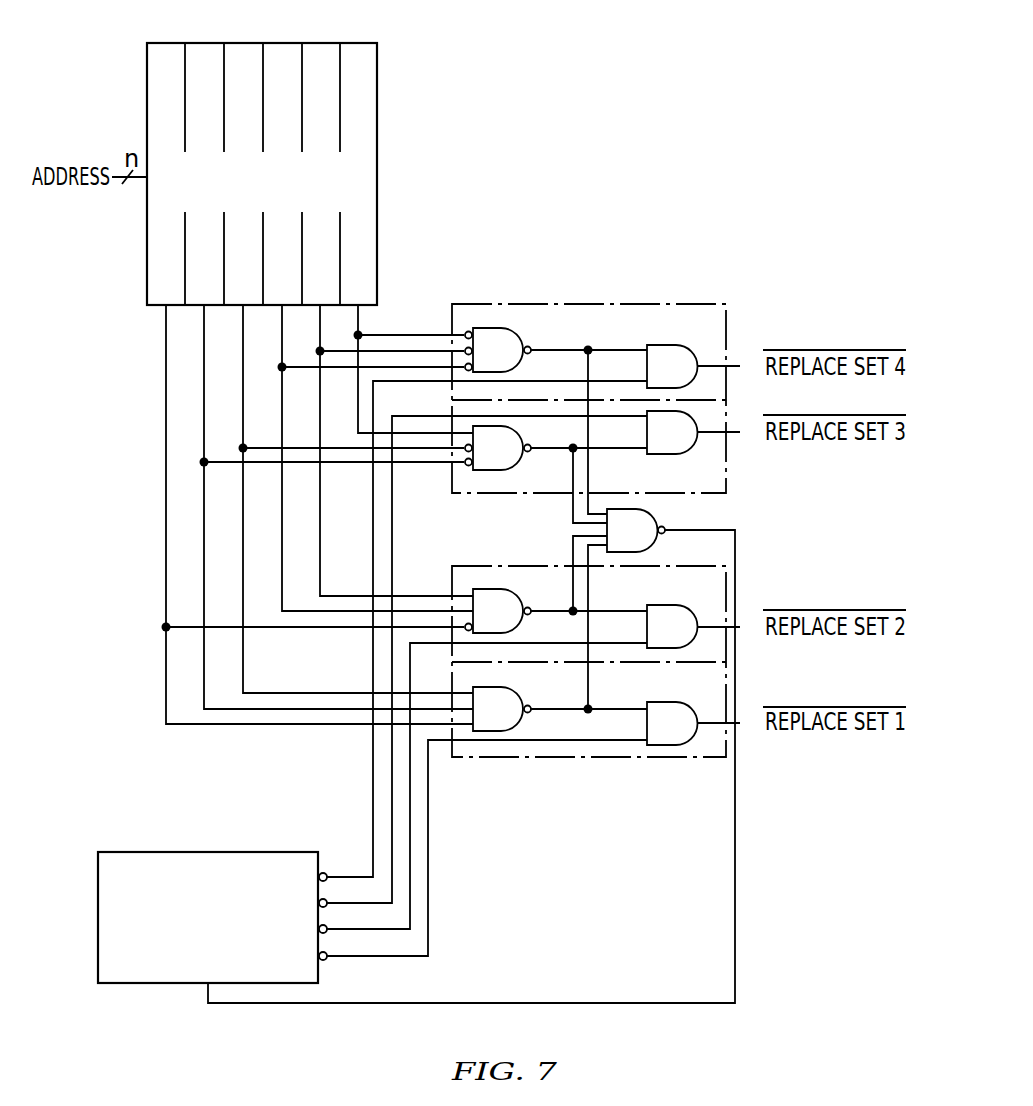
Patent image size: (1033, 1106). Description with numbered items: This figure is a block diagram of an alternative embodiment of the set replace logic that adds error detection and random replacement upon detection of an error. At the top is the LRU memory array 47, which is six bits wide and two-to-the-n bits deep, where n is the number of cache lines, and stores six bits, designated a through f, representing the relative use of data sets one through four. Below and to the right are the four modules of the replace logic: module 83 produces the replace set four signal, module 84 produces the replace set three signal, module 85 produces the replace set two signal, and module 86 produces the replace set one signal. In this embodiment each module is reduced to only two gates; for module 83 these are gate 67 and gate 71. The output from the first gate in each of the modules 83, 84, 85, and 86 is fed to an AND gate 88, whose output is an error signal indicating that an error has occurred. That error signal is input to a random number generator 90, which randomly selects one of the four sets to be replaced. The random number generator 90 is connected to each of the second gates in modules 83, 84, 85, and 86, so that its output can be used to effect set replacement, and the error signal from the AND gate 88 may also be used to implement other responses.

The LRU memory array 47 is at (378, 62).
The gate 67 is at (510, 328).
The gate 71 is at (668, 345).
The module 83 is at (703, 303).
The module 84 is at (726, 473).
The module 85 is at (706, 564).
The module 86 is at (703, 757).
The AND gate 88 is at (631, 509).
The random number generator 90 is at (162, 852).